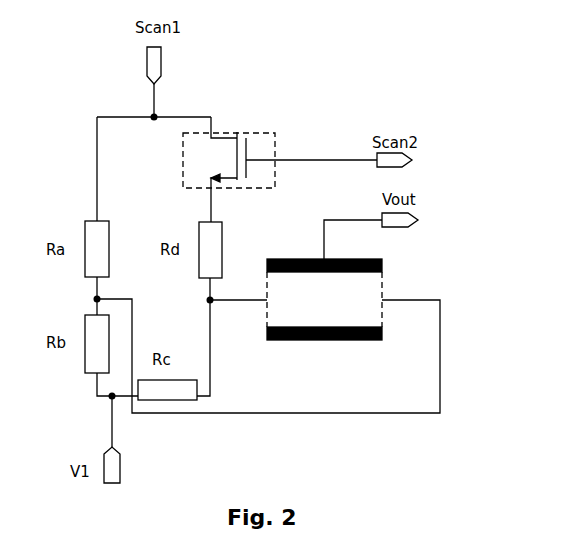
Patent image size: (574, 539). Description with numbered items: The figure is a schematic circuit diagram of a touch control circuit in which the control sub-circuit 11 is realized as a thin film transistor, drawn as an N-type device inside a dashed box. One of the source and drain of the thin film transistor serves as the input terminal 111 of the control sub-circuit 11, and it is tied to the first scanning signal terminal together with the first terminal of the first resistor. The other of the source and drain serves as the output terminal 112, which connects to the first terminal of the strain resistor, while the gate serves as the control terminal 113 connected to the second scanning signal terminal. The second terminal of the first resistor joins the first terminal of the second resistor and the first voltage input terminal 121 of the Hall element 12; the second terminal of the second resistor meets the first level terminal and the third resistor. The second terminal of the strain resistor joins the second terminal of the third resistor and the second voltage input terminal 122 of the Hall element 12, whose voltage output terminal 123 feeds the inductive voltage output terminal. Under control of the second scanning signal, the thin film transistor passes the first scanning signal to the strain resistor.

The control sub-circuit 11 is at (262, 133).
The input terminal 111 is at (229, 125).
The output terminal 112 is at (228, 198).
The control terminal 113 is at (311, 170).
The Hall element 12 is at (317, 280).
The first voltage input terminal 121 is at (341, 324).
The second voltage input terminal 122 is at (238, 292).
The voltage output terminal 123 is at (324, 246).